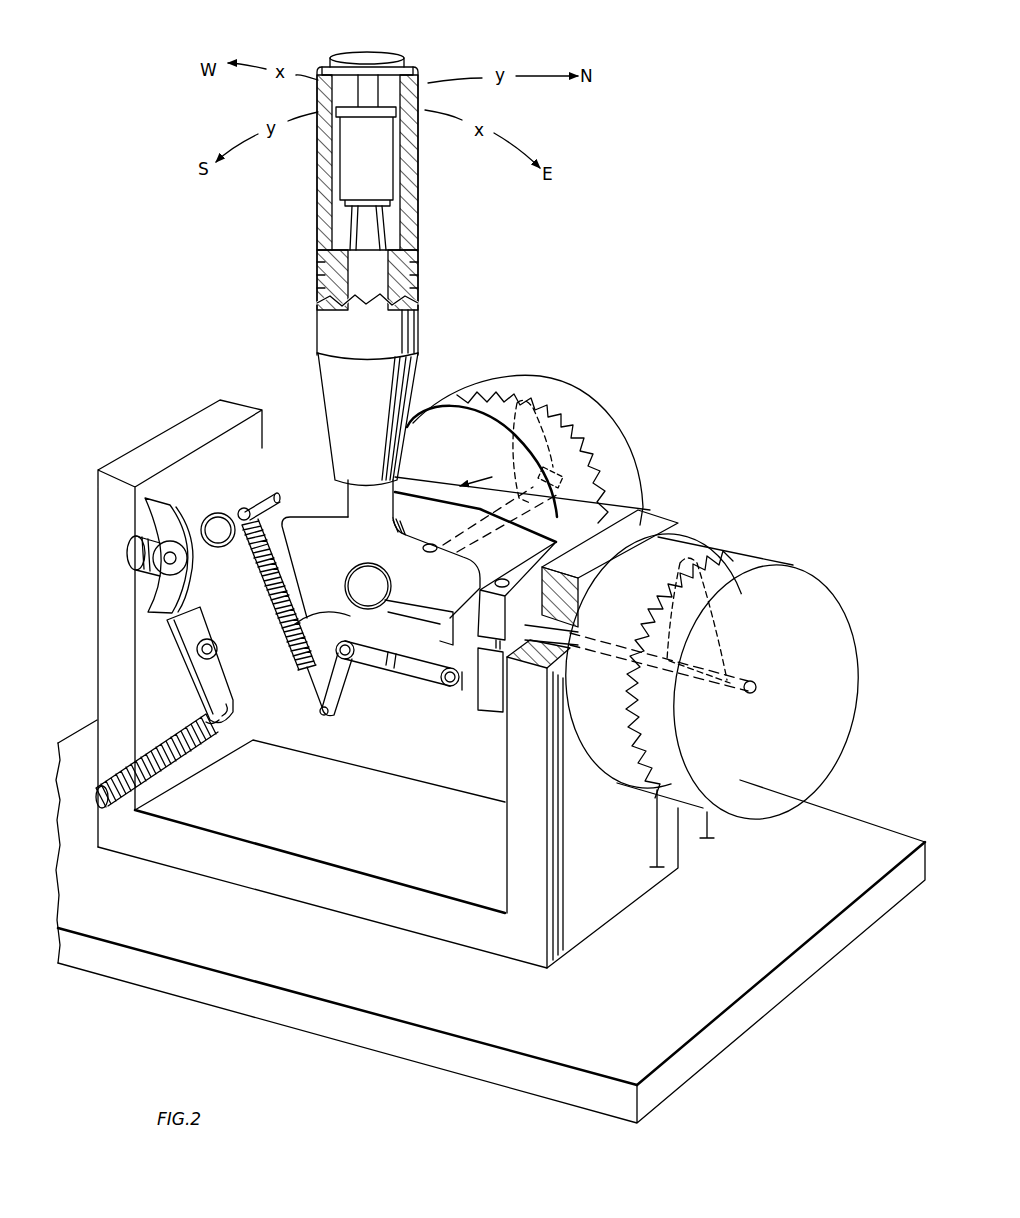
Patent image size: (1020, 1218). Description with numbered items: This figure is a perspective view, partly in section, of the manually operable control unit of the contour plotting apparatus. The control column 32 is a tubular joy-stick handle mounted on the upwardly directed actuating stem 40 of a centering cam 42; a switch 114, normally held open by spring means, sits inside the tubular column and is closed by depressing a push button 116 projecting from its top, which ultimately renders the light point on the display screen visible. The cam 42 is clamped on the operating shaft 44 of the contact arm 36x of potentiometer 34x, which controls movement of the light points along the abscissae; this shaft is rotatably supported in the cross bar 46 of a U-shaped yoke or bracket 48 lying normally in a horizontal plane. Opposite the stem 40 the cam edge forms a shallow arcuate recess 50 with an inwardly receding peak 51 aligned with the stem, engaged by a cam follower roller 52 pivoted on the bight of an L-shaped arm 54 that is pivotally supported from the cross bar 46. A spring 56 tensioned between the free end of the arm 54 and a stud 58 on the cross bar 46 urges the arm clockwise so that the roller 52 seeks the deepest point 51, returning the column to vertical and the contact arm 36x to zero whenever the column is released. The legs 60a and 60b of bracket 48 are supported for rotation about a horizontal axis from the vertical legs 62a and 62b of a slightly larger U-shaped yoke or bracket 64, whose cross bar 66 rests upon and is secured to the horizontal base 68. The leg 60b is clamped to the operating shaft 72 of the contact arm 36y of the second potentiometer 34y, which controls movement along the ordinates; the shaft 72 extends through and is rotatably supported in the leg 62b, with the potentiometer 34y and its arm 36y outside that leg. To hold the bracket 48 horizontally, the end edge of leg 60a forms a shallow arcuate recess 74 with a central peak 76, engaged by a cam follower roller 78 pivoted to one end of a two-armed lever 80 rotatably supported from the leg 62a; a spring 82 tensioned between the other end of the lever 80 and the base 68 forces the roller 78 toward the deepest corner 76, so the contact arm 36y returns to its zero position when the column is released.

The push button 116 is at (390, 52).
The switch 114 is at (345, 170).
The control column 32 is at (296, 238).
The leg of outer bracket 62a is at (154, 448).
The stud 58 is at (273, 490).
The arcuate recess 74 is at (160, 519).
The leg of bracket 60a is at (205, 522).
The peak 76 is at (188, 556).
The cam follower roller 78 is at (158, 572).
The spring 56 is at (268, 580).
The centering cam 42 is at (322, 556).
The actuating stem 40 is at (398, 497).
The U-shaped yoke or bracket 48 is at (501, 505).
The potentiometer 34x is at (562, 418).
The contact arm 36x is at (522, 422).
The leg of outer bracket 62b is at (652, 516).
The cross bar 46 is at (512, 558).
The operating shaft 44 is at (378, 596).
The peak 51 is at (360, 610).
The two-armed lever 80 is at (206, 686).
The spring 82 is at (167, 742).
The cam follower roller 52 is at (388, 664).
The arcuate recess 50 is at (409, 666).
The L-shaped arm 54 is at (336, 713).
The leg of bracket 60b is at (490, 712).
The contact arm 36y is at (708, 606).
The operating shaft 72 is at (746, 674).
The potentiometer 34y is at (622, 699).
The cross bar 66 is at (362, 850).
The U-shaped yoke or bracket 64 is at (192, 856).
The base 68 is at (358, 968).